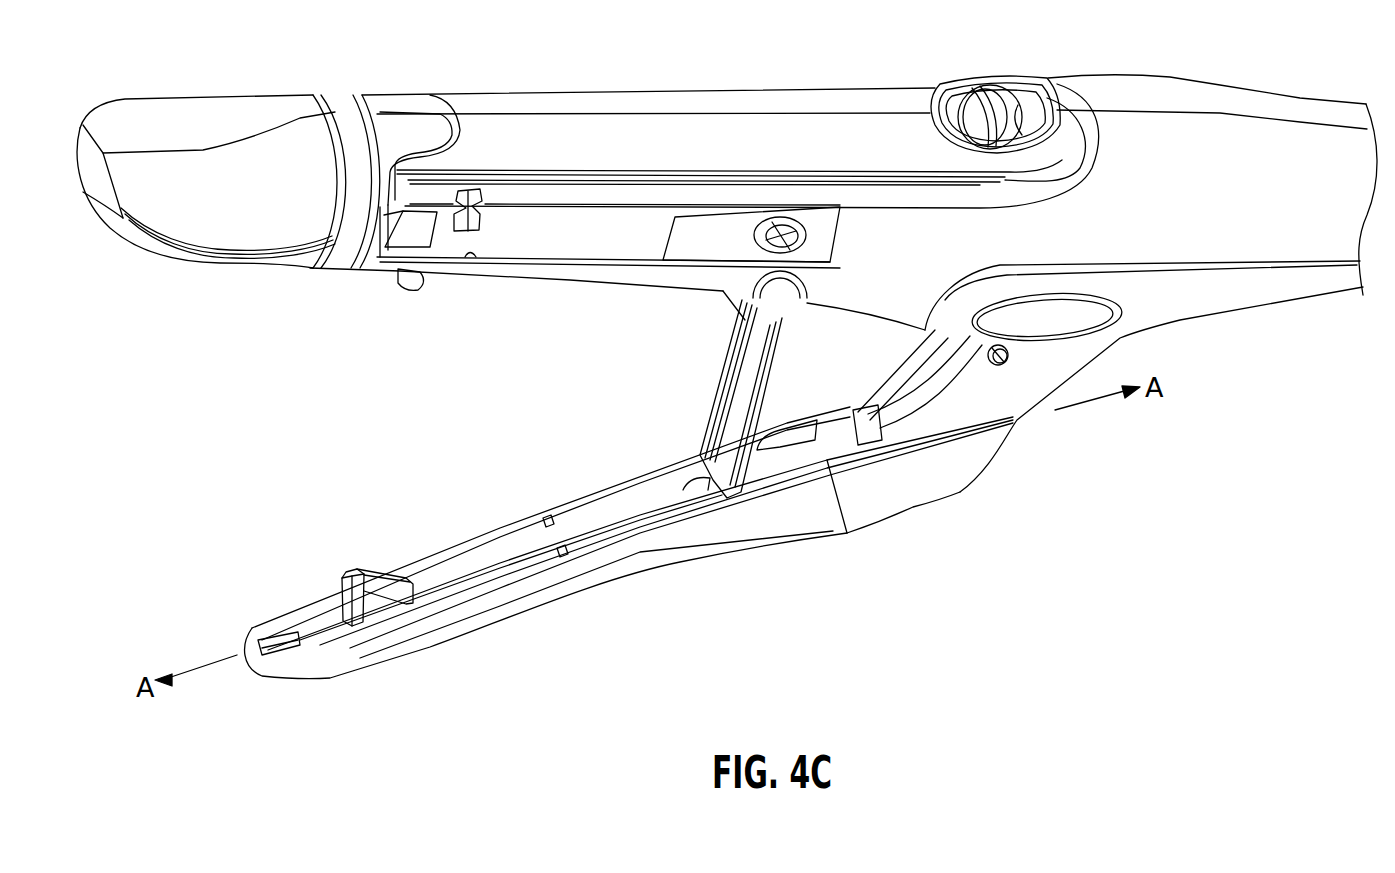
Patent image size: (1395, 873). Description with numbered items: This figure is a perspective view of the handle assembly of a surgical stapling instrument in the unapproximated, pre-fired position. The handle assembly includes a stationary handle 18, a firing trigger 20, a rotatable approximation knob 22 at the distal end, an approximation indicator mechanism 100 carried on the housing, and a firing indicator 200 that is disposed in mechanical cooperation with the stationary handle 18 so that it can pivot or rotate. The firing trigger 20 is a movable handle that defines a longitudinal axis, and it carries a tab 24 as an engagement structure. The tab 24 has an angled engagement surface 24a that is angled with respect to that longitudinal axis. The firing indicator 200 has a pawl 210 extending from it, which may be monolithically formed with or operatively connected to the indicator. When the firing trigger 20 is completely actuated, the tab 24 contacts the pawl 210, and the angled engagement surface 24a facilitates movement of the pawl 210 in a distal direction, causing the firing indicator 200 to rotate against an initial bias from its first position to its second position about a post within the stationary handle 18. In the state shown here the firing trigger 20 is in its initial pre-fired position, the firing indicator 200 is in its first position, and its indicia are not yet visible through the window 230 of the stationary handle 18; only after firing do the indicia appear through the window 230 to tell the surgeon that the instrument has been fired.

The approximation indicator mechanism 100 is at (960, 54).
The stationary handle 18 is at (472, 100).
The rotatable approximation knob 22 is at (164, 115).
The firing trigger 20 is at (572, 594).
The tab 24 is at (373, 603).
The angled engagement surface 24a is at (377, 573).
The firing indicator 200 is at (388, 300).
The pawl 210 is at (420, 286).
The window 230 is at (473, 210).